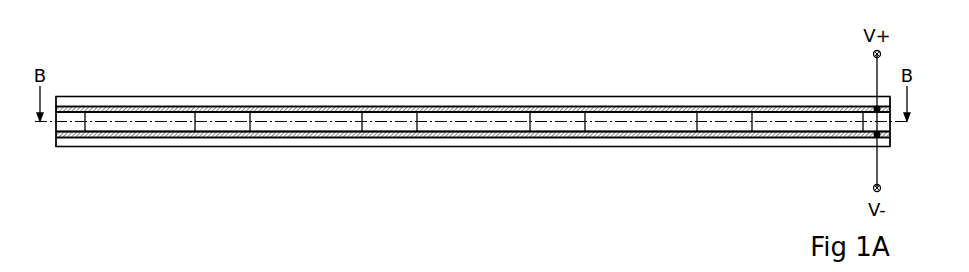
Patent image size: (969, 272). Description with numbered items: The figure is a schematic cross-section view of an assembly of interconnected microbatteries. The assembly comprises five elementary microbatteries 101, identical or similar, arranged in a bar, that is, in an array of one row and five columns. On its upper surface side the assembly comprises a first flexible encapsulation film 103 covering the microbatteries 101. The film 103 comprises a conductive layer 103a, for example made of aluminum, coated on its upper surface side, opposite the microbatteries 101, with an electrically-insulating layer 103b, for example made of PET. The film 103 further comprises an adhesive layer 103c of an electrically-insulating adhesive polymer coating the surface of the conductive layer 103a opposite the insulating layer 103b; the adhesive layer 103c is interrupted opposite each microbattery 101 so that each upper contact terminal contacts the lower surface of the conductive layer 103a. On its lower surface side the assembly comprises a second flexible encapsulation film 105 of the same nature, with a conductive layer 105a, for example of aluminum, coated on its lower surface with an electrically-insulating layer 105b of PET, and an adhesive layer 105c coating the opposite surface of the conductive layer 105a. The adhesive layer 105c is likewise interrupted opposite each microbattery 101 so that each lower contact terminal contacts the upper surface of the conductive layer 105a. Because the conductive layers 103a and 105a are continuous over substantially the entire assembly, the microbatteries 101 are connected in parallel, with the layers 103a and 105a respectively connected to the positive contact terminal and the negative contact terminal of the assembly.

The elementary microbattery 101 is at (140, 125).
The first flexible encapsulation film 103 is at (142, 36).
The conductive layer 103a is at (186, 108).
The electrically-insulating layer 103b is at (231, 101).
The adhesive layer 103c is at (243, 112).
The second flexible encapsulation film 105 is at (127, 212).
The conductive layer 105a is at (180, 134).
The electrically-insulating layer 105b is at (218, 140).
The adhesive layer 105c is at (247, 128).